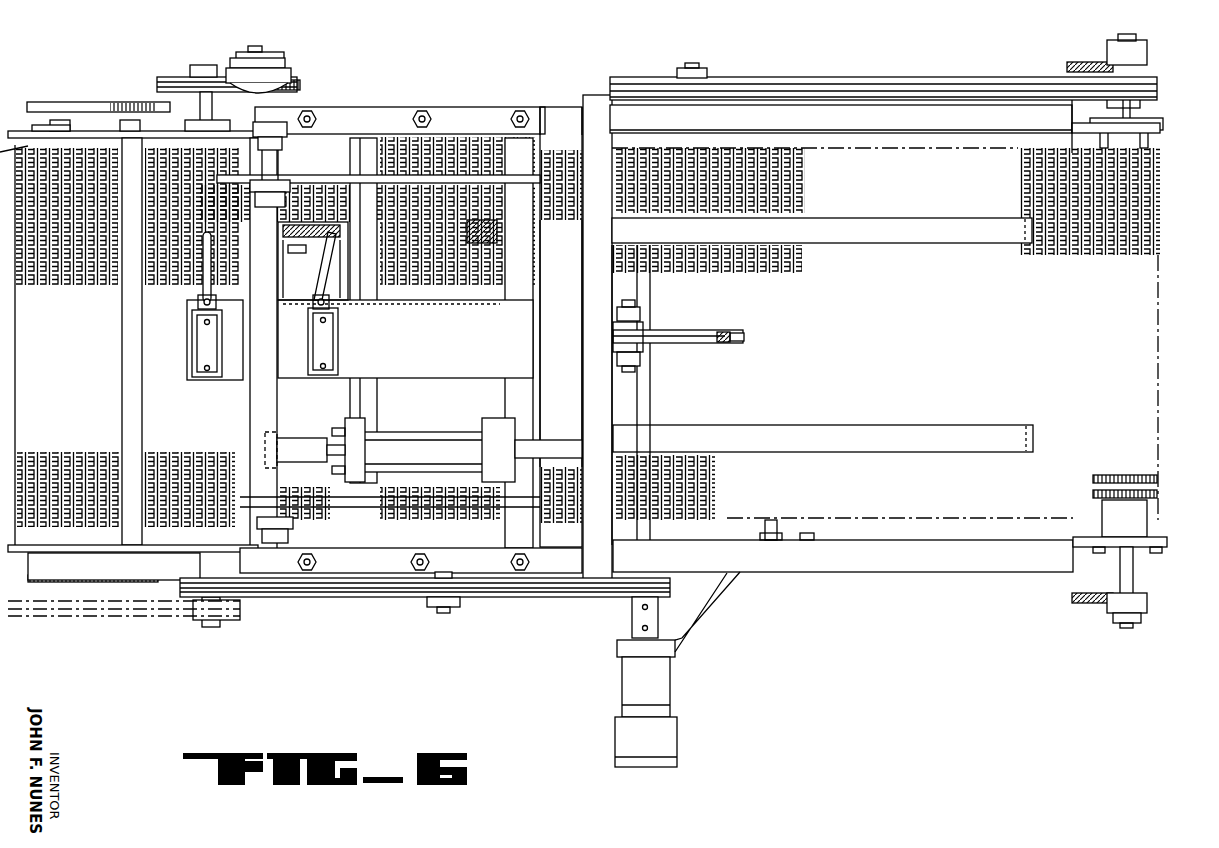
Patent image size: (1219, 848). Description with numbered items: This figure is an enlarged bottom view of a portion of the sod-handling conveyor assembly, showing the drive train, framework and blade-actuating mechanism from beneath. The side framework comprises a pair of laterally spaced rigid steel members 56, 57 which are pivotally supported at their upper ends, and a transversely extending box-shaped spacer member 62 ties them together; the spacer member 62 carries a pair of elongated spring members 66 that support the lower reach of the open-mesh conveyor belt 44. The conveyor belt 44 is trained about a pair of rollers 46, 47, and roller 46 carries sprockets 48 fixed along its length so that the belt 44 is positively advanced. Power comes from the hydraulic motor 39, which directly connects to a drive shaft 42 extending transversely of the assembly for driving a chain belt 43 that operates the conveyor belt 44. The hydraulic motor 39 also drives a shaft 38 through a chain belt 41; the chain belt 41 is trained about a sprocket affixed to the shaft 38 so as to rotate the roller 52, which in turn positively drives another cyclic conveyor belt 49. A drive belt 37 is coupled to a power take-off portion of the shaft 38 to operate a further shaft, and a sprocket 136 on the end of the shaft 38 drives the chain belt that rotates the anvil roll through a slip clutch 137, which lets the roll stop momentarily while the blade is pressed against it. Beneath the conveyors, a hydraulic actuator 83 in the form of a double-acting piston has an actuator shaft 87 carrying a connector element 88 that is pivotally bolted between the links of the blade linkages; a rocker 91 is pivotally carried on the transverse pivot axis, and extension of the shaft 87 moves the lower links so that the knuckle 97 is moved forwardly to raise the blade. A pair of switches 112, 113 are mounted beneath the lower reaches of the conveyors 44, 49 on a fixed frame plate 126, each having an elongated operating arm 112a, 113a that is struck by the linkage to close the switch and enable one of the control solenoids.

The drive belt 37 is at (100, 625).
The shaft 38 is at (200, 102).
The hydraulic motor 39 is at (665, 749).
The chain belt 41 is at (350, 597).
The drive shaft 42 is at (640, 290).
The chain belt 43 is at (803, 86).
The conveyor belt 44 is at (1020, 173).
The roller 46 is at (1135, 140).
The roller 47 is at (307, 147).
The sprockets 48 is at (1118, 492).
The conveyor belt 49 is at (180, 450).
The roller 52 is at (238, 132).
The rigid steel member 56 is at (560, 112).
The rigid steel member 57 is at (830, 573).
The box-shaped spacer member 62 is at (595, 365).
The spring members 66 is at (972, 236).
The hydraulic actuator 83 is at (438, 459).
The actuator shaft 87 is at (395, 425).
The connector element 88 is at (305, 445).
The rocker 91 is at (262, 392).
The knuckle 97 is at (278, 268).
The switch 112 is at (325, 350).
The operating arm 112a is at (325, 282).
The switch 113 is at (205, 345).
The operating arm 113a is at (203, 285).
The frame plate 126 is at (470, 364).
The sprocket 136 is at (167, 77).
The slip clutch 137 is at (207, 150).